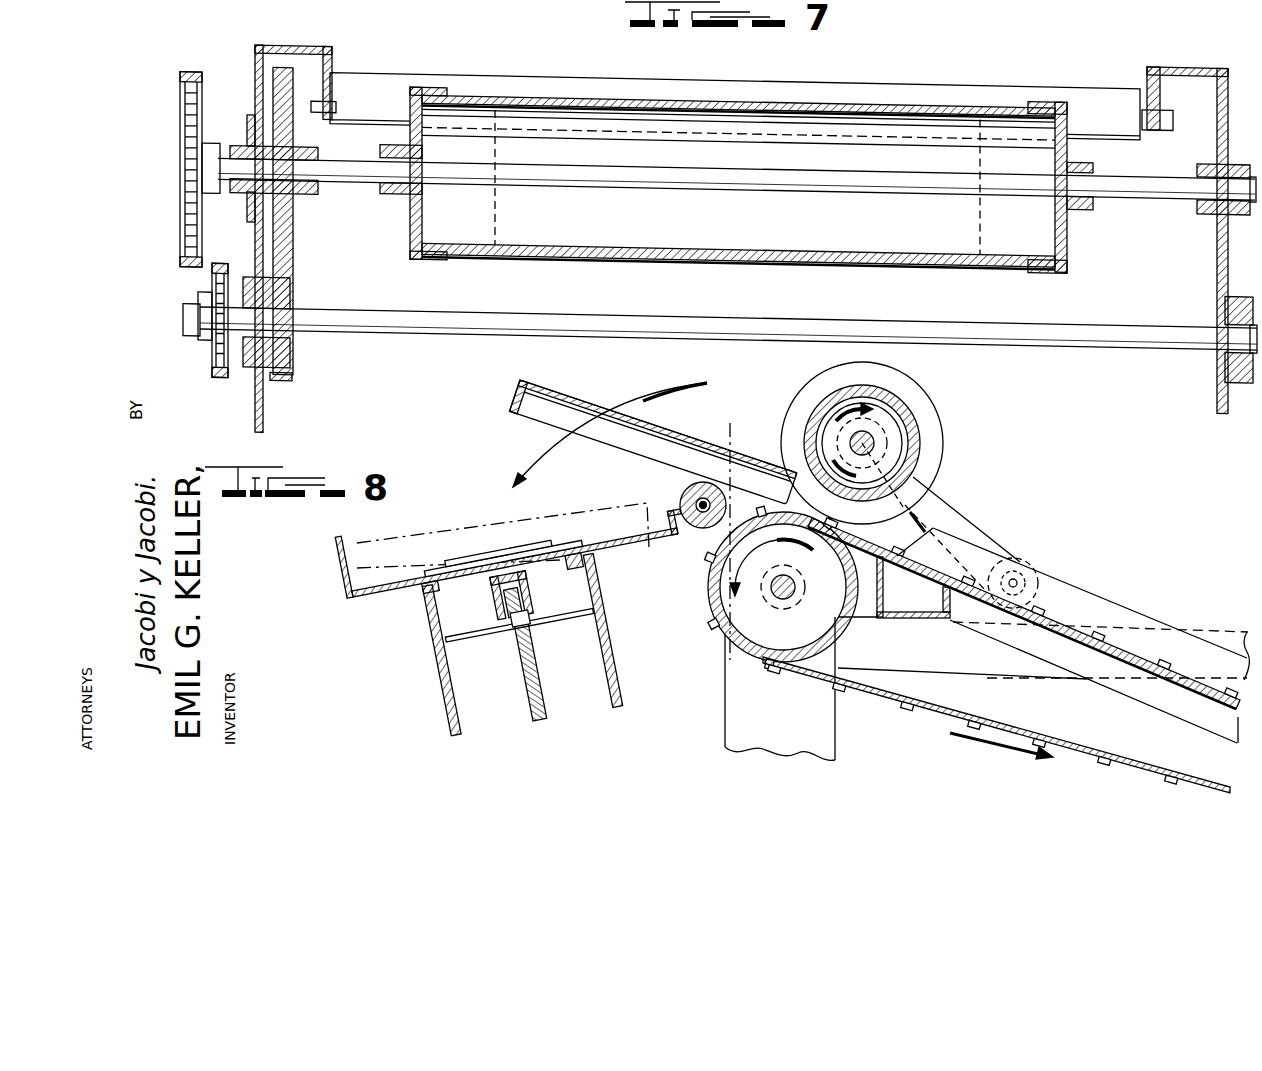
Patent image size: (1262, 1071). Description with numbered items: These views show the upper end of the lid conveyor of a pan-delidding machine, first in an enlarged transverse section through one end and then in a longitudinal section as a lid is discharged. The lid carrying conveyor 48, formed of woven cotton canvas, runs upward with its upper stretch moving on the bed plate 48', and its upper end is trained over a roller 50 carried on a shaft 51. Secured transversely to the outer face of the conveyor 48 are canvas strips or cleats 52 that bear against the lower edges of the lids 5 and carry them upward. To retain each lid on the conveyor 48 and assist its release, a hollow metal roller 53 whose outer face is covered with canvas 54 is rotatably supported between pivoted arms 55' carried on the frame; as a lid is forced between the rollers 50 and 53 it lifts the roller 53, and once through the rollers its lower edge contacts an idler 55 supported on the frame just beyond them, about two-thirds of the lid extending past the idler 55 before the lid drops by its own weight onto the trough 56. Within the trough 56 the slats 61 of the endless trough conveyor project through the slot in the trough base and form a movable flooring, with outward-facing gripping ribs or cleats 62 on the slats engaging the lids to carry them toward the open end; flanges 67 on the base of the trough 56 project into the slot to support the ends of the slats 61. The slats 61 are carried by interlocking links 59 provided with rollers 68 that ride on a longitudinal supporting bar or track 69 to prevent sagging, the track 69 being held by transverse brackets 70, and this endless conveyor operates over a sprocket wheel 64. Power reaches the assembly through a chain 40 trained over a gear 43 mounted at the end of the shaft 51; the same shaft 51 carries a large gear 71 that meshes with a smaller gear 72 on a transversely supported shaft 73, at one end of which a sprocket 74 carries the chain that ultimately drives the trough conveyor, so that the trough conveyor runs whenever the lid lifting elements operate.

In FIG. 7, the chain 40 is at (185, 68).
In FIG. 7, the gear 43 is at (183, 169).
In FIG. 7, the idler 55 is at (735, 88).
In FIG. 7, the cleats 52 is at (767, 83).
In FIG. 8, the cleats 52 is at (975, 578).
In FIG. 7, the lid carrying conveyor 48 is at (738, 146).
In FIG. 8, the lid carrying conveyor 48 is at (1001, 655).
In FIG. 7, the shaft 51 is at (548, 174).
In FIG. 8, the shaft 51 is at (782, 594).
In FIG. 7, the large gear 71 is at (288, 231).
In FIG. 7, the smaller gear 72 is at (290, 292).
In FIG. 7, the roller 50 is at (465, 248).
In FIG. 8, the roller 50 is at (705, 615).
In FIG. 7, the shaft 73 is at (392, 320).
In FIG. 7, the sprocket 74 is at (215, 346).
In FIG. 8, the lid 5 is at (663, 452).
In FIG. 8, the trough 56 is at (373, 583).
In FIG. 8, the canvas covering 54 is at (913, 413).
In FIG. 8, the hollow metal roller 53 is at (918, 452).
In FIG. 8, the pivoted arms 55' is at (962, 533).
In FIG. 8, the bed plate 48' is at (1043, 627).
In FIG. 8, the slats 61 is at (563, 563).
In FIG. 8, the gripping ribs or cleats 62 is at (487, 562).
In FIG. 8, the interlocking links 59 is at (532, 588).
In FIG. 8, the flanges 67 is at (436, 615).
In FIG. 8, the rollers 68 is at (493, 610).
In FIG. 8, the transverse supports or brackets 70 is at (485, 637).
In FIG. 8, the supporting bar or track 69 is at (530, 622).
In FIG. 8, the sprocket wheel 64 is at (527, 690).